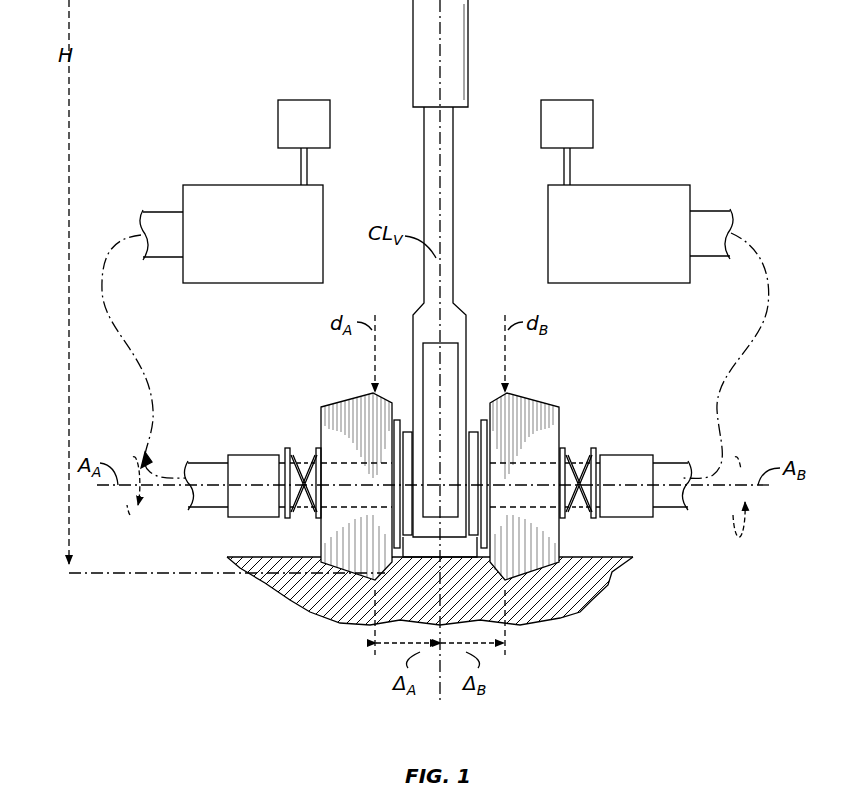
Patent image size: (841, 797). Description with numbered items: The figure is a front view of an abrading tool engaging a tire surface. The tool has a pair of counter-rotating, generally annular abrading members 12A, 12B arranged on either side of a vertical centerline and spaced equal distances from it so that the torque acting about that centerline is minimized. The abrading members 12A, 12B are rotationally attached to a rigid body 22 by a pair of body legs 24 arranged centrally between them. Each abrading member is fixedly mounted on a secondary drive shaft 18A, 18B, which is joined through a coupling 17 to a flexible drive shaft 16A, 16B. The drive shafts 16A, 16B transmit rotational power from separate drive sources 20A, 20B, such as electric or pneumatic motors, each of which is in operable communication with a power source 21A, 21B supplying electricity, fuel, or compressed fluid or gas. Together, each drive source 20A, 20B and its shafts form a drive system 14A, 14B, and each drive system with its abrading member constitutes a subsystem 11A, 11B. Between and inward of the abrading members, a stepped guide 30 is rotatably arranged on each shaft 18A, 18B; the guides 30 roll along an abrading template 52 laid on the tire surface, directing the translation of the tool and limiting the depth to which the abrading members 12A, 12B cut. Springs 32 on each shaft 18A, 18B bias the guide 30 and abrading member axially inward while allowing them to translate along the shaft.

The subsystem 11A is at (275, 629).
The subsystem 11B is at (586, 627).
The abrading member 12A is at (352, 405).
The abrading member 12B is at (527, 405).
The drive system 14A is at (152, 543).
The drive system 14B is at (707, 541).
The drive shaft 16A is at (162, 225).
The drive shaft 16B is at (711, 225).
The coupling 17 is at (258, 465).
The secondary drive shaft 18A is at (305, 510).
The secondary drive shaft 18B is at (578, 510).
The drive source 20A is at (222, 200).
The drive source 20B is at (650, 200).
The power source 21A is at (300, 112).
The power source 21B is at (567, 112).
The body 22 is at (424, 163).
The body leg 24 is at (453, 418).
The guide 30 is at (398, 420).
The spring 32 is at (300, 455).
The abrading template 52 is at (431, 545).